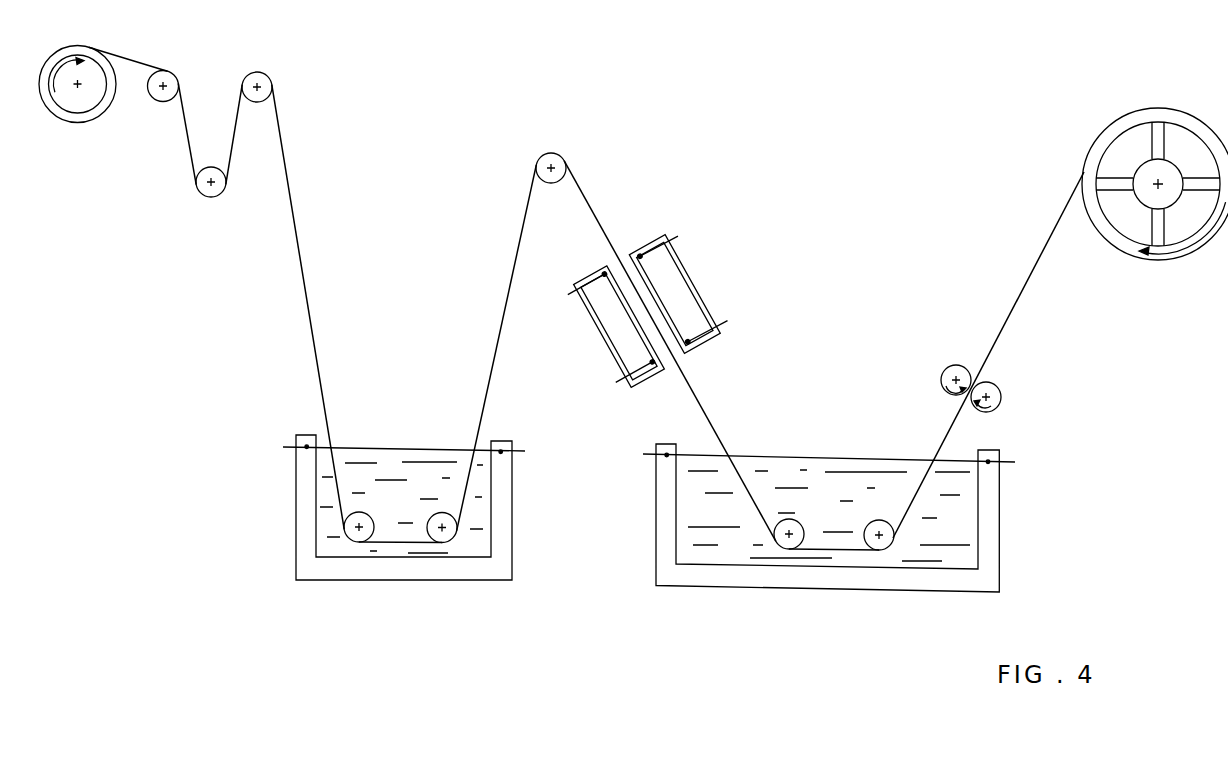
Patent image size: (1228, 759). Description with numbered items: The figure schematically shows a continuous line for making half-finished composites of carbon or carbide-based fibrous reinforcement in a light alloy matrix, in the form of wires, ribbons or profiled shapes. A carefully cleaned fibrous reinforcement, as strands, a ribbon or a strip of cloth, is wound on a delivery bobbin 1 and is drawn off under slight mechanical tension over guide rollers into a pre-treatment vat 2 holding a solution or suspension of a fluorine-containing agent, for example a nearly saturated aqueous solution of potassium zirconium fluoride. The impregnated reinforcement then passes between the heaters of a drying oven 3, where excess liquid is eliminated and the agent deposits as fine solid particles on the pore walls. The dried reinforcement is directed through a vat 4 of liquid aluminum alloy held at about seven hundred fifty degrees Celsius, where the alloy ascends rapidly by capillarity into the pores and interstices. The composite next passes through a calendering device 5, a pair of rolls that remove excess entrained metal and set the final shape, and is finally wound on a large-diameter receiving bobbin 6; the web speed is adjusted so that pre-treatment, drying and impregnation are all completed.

The delivery bobbin 1 is at (87, 116).
The pre-treatment vat 2 is at (328, 491).
The drying oven 3 is at (695, 282).
The vat of liquid aluminum alloy 4 is at (967, 495).
The calendering device 5 is at (1000, 394).
The receiving bobbin 6 is at (1117, 121).